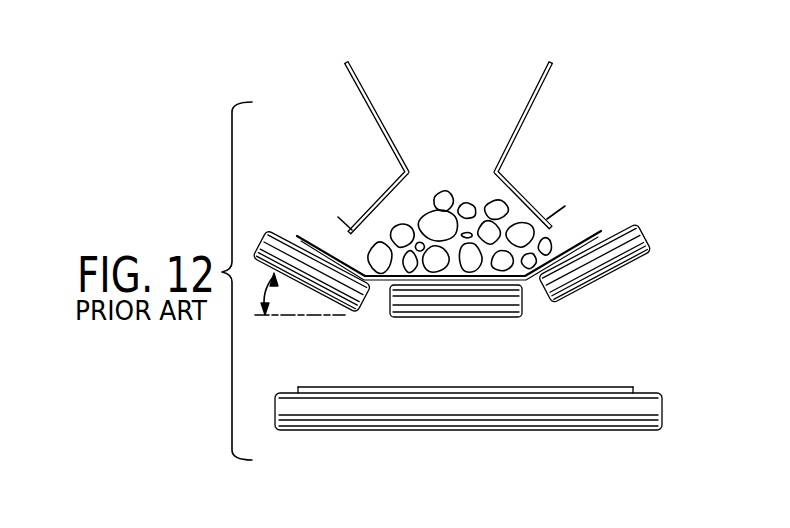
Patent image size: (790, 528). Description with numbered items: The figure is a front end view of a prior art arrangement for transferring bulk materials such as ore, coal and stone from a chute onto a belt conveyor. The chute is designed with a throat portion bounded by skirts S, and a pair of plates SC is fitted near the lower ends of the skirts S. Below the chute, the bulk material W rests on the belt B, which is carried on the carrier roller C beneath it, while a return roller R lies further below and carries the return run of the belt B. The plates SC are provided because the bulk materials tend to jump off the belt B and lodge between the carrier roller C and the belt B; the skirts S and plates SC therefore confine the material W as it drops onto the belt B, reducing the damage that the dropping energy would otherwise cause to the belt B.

The skirt S is at (549, 80).
The plates SC is at (573, 257).
The material (ore) W is at (423, 208).
The belt B is at (369, 280).
The carrier roller C is at (452, 298).
The return roller R is at (623, 410).